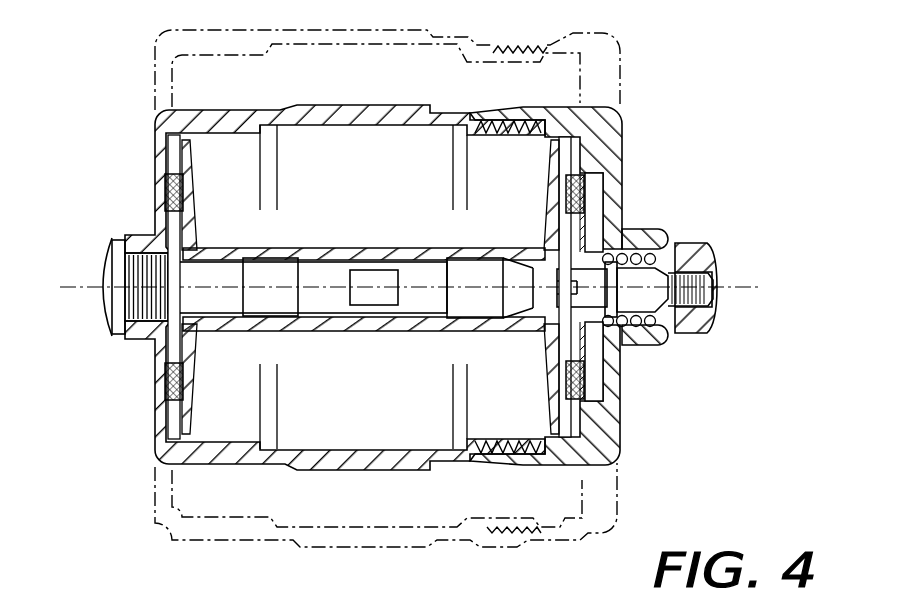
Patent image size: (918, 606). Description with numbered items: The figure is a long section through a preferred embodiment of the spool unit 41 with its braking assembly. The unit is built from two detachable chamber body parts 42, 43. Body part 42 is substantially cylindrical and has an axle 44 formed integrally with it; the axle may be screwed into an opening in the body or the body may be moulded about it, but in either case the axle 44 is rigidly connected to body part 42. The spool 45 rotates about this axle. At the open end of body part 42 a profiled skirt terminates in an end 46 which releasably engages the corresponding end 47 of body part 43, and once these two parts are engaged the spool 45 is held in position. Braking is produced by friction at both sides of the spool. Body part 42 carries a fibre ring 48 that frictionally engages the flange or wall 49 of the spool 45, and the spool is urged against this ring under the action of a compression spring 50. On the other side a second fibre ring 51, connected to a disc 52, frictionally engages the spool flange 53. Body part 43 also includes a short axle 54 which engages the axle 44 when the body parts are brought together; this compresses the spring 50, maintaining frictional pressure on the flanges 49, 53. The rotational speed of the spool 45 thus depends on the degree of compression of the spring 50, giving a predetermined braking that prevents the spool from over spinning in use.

The spool unit 41 is at (740, 112).
The chamber body part 42 is at (148, 132).
The chamber body part 43 is at (633, 133).
The axle 44 is at (330, 300).
The spool 45 is at (407, 320).
The end of profiled skirt 46 is at (508, 112).
The end of body part 47 is at (506, 125).
The fibre ring 48 is at (158, 180).
The flange or wall 49 is at (193, 190).
The compression spring 50 is at (640, 347).
The fibre ring 51 is at (620, 386).
The disc 52 is at (617, 223).
The spool flange 53 is at (545, 367).
The short axle 54 is at (712, 291).